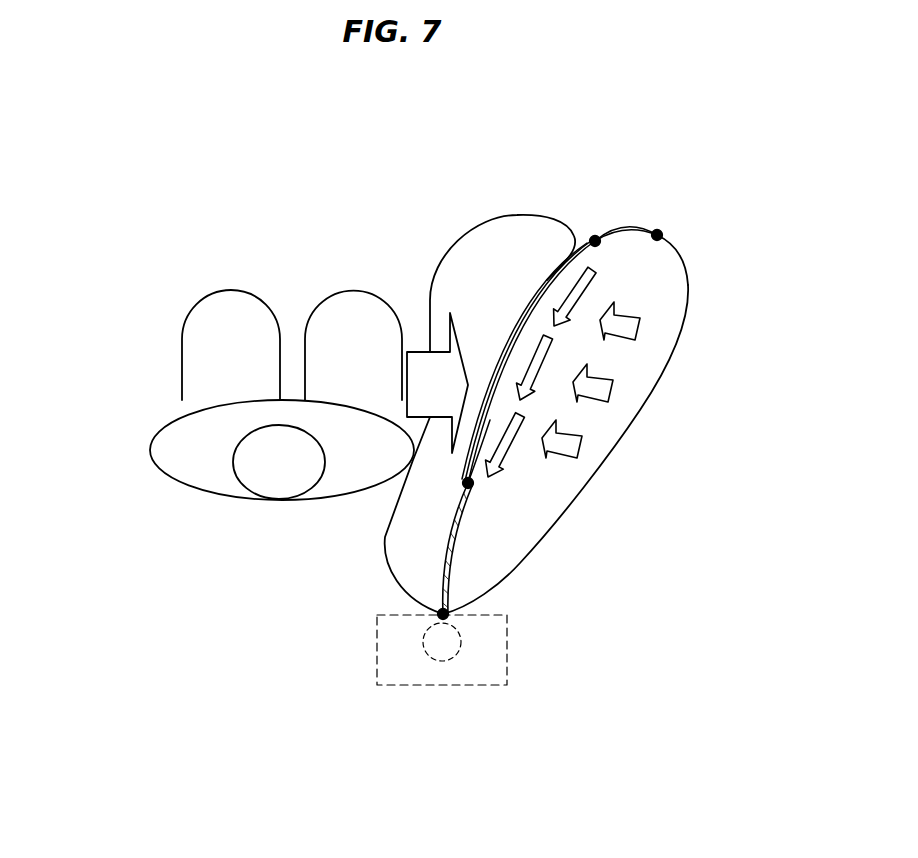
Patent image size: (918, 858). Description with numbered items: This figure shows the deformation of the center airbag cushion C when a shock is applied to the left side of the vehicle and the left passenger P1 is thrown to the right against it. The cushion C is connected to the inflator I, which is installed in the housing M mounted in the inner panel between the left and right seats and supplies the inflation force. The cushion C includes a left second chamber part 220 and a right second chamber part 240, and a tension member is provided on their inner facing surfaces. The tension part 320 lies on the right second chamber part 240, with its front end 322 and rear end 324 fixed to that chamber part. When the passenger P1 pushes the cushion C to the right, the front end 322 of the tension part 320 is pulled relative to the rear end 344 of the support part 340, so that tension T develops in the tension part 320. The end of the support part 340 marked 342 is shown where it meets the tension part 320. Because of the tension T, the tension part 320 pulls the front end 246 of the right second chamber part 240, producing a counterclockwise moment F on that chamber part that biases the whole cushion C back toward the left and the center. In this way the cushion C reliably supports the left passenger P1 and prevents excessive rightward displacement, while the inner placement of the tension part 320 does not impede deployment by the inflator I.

The left second chamber part 220 is at (445, 267).
The right second chamber part 240 is at (619, 411).
The front end of right second chamber part 246 is at (652, 265).
The tension part 320 is at (593, 354).
The front end of tension part 322 is at (633, 230).
The rear end of tension part 324 is at (470, 484).
The support part 340 is at (461, 549).
The first end of second tether 342 is at (466, 484).
The rear end of support part 344 is at (405, 603).
The center airbag cushion C is at (572, 353).
The counterclockwise moment F is at (578, 448).
The tension T is at (510, 447).
The inflator I is at (442, 661).
The housing M is at (375, 645).
The left passenger P1 is at (150, 450).